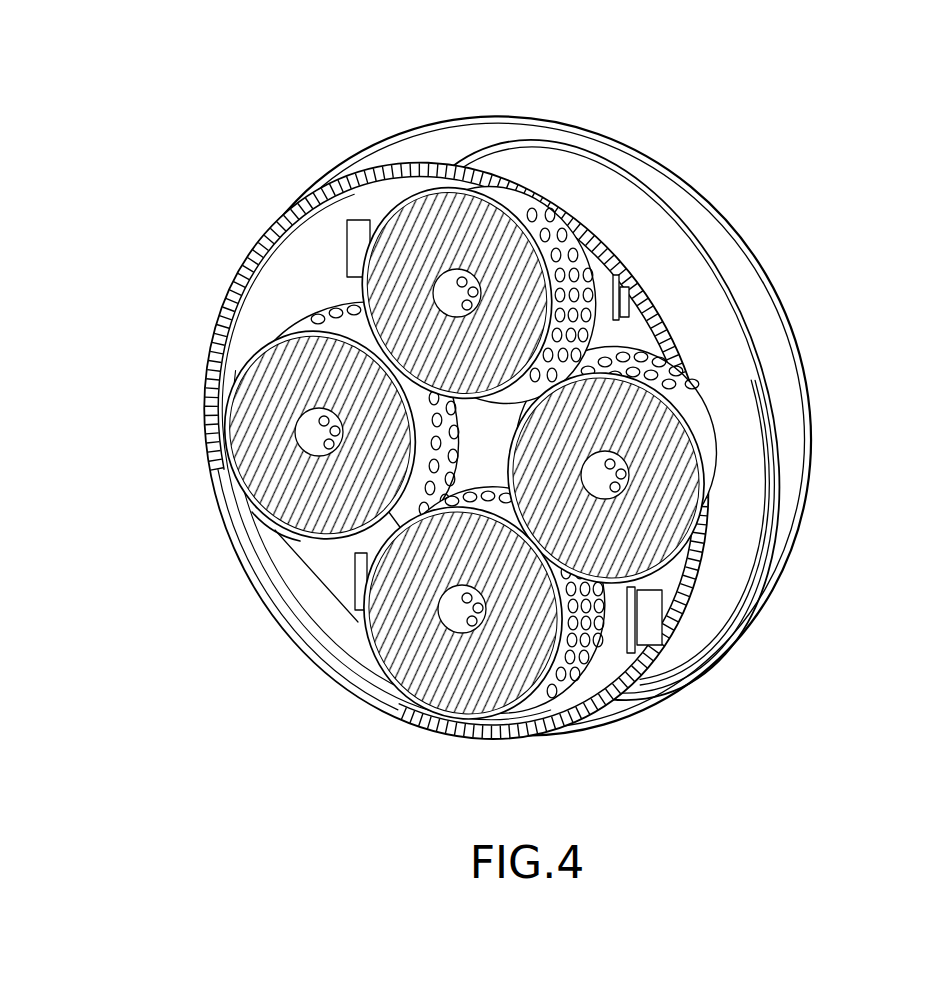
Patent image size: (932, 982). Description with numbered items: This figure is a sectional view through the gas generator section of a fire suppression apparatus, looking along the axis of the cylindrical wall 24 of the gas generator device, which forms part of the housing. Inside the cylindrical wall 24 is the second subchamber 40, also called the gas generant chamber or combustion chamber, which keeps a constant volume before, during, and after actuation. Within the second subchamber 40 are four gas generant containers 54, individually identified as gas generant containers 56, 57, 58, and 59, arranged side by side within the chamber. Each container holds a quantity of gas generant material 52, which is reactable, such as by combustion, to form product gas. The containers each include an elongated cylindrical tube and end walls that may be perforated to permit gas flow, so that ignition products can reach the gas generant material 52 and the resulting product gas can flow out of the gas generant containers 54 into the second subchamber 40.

The cylindrical wall 24 is at (708, 200).
The second subchamber 40 is at (330, 570).
The gas generant material 52 is at (395, 242).
The gas generant containers 54 is at (302, 310).
The gas generant container 56 is at (547, 223).
The gas generant container 57 is at (662, 350).
The gas generant container 58 is at (585, 670).
The gas generant container 59 is at (275, 530).